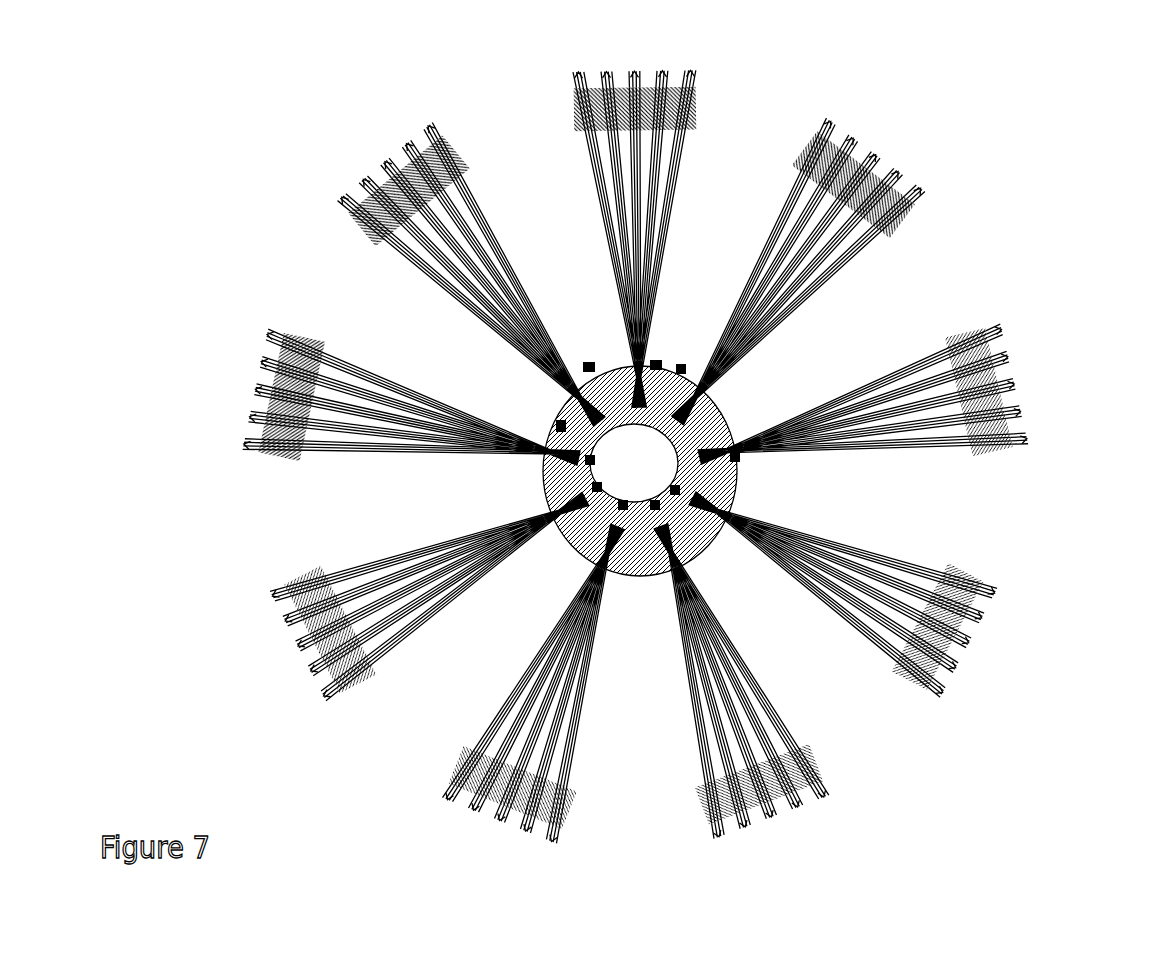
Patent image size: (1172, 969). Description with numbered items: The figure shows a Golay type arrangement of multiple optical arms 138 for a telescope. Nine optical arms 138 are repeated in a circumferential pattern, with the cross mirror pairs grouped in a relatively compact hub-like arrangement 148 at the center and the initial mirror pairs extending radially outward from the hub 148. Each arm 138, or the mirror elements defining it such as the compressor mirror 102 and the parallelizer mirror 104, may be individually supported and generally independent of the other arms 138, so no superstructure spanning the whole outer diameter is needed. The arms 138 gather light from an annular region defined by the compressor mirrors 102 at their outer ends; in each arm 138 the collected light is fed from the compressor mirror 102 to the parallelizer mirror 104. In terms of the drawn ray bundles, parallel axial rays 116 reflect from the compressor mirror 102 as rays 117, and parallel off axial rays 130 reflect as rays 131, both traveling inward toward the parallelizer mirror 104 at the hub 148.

The compressor mirror 102 is at (985, 765).
The parallelizer mirror 104 is at (792, 475).
The parallel axial rays 116 is at (400, 83).
The reflected axial rays 117 is at (605, 712).
The parallel off axial rays 130 is at (640, 438).
The reflected off axial rays 131 is at (635, 457).
The optical arm 138 is at (686, 56).
The hub-like arrangement 148 is at (745, 395).